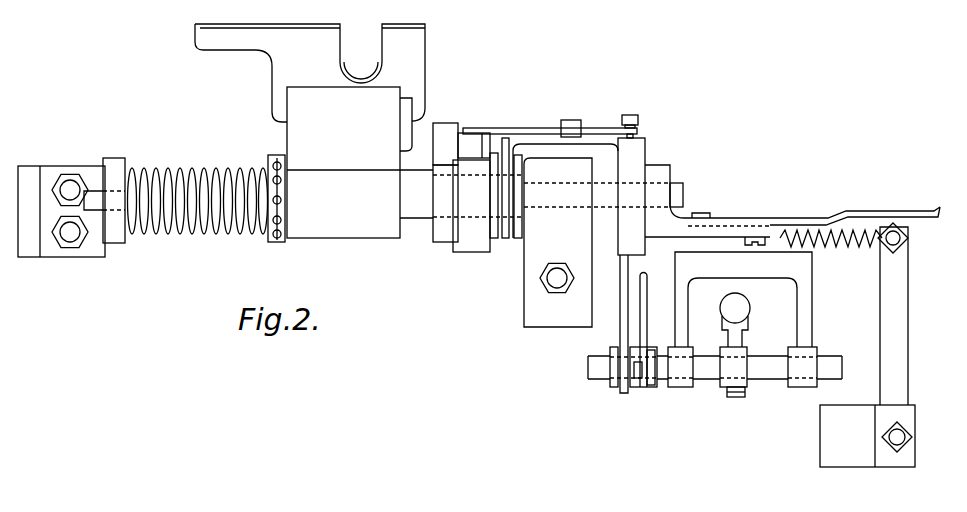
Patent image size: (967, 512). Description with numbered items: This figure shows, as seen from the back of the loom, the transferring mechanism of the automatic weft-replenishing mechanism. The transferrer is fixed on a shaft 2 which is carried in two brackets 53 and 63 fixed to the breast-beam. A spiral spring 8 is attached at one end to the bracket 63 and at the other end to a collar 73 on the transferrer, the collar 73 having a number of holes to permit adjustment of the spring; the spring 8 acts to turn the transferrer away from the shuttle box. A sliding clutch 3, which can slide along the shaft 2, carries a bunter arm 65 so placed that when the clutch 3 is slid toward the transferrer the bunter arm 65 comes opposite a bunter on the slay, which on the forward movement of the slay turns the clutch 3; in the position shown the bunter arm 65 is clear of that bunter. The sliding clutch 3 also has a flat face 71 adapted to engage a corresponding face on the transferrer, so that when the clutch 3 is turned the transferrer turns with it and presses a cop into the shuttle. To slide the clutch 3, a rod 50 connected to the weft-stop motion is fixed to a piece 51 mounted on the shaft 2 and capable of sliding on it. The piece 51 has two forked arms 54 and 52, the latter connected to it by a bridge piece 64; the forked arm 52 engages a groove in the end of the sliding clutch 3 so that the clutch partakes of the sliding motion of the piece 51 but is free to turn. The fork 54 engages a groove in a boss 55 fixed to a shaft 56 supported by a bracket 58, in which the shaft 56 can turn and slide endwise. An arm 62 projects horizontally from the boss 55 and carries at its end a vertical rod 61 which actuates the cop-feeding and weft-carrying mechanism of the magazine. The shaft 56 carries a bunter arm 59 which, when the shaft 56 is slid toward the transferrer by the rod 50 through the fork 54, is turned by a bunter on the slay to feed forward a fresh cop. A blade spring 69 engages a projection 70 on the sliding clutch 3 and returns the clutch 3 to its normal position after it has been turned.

The shaft 2 is at (423, 193).
The sliding clutch 3 is at (445, 228).
The spiral spring 8 is at (192, 232).
The rod 50 is at (885, 212).
The piece 51 is at (658, 172).
The forked arm 52 is at (506, 238).
The bracket 53 is at (558, 242).
The forked arm 54 is at (626, 322).
The boss 55 is at (612, 386).
The shaft 56 is at (717, 360).
The bracket 58 is at (742, 319).
The bunter arm 59 is at (740, 317).
The vertical rod 61 is at (643, 312).
The arm 62 is at (640, 390).
The bracket 63 is at (56, 248).
The bridge piece 64 is at (523, 143).
The bunter arm 65 is at (483, 243).
The blade spring 69 is at (492, 130).
The projection 70 is at (470, 140).
The flat face 71 is at (440, 132).
The collar 73 is at (267, 245).